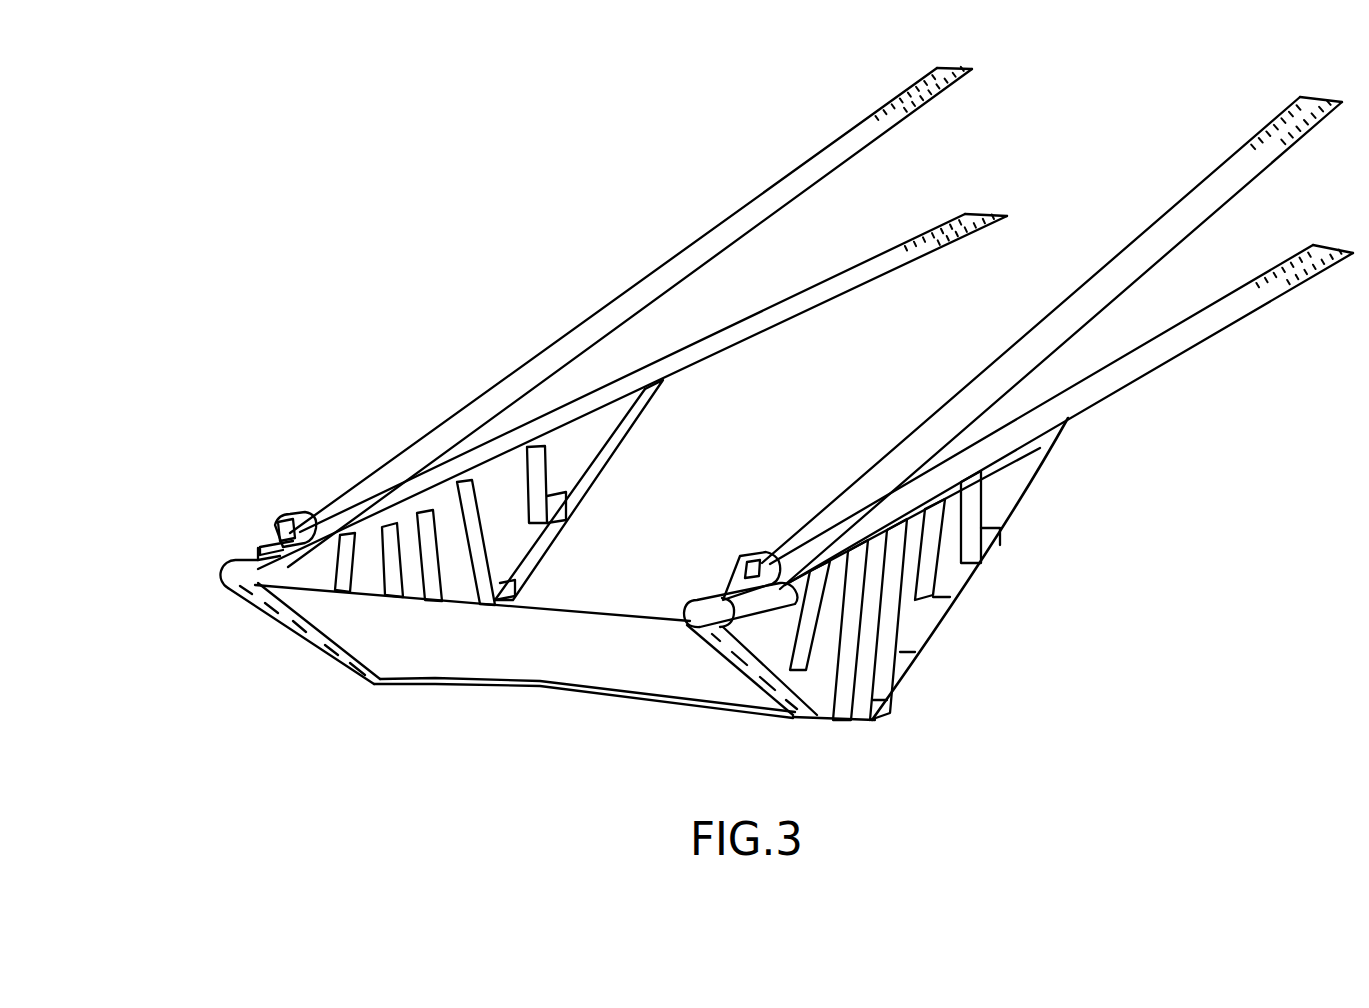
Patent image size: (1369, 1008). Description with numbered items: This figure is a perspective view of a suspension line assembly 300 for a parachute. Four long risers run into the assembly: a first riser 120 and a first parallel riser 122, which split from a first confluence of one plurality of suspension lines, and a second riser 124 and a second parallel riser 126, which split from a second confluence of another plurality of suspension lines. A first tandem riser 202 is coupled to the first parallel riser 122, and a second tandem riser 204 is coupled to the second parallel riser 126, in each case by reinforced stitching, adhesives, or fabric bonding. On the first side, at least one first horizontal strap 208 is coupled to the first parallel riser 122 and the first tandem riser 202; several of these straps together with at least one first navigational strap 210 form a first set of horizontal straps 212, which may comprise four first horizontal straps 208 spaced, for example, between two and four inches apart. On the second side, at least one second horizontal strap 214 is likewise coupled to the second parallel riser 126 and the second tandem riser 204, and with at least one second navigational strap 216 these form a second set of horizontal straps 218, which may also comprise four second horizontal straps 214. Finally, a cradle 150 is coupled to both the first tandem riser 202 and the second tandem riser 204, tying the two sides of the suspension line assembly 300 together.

The suspension line assembly 300 is at (503, 170).
The cradle 150 is at (542, 655).
The first riser 120 is at (779, 206).
The first parallel riser 122 is at (812, 298).
The second riser 124 is at (1223, 188).
The second parallel riser 126 is at (1147, 365).
The first tandem riser 202 is at (615, 449).
The second tandem riser 204 is at (1020, 494).
The first horizontal strap 208 is at (300, 558).
The first navigational strap 210 is at (527, 447).
The first set of horizontal straps 212 is at (160, 355).
The second horizontal strap 214 is at (930, 569).
The second navigational strap 216 is at (973, 523).
The second set of horizontal straps 218 is at (1174, 770).